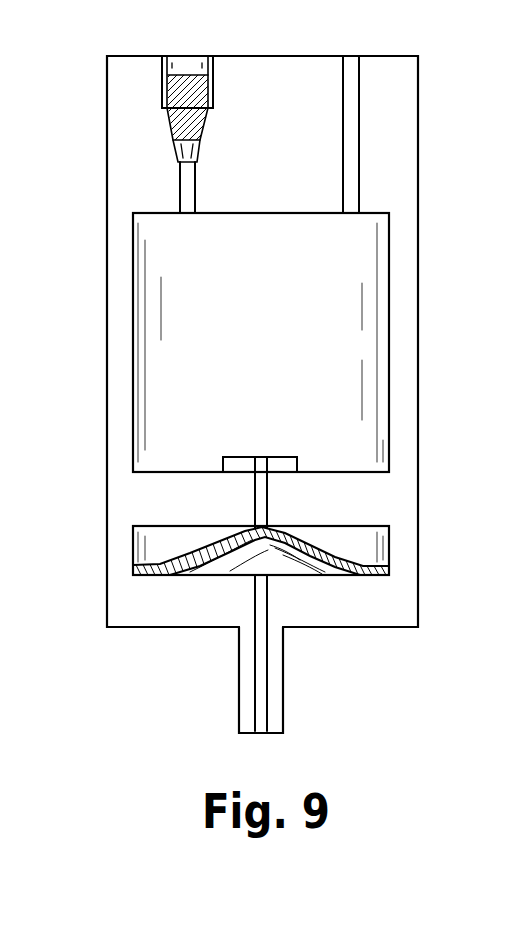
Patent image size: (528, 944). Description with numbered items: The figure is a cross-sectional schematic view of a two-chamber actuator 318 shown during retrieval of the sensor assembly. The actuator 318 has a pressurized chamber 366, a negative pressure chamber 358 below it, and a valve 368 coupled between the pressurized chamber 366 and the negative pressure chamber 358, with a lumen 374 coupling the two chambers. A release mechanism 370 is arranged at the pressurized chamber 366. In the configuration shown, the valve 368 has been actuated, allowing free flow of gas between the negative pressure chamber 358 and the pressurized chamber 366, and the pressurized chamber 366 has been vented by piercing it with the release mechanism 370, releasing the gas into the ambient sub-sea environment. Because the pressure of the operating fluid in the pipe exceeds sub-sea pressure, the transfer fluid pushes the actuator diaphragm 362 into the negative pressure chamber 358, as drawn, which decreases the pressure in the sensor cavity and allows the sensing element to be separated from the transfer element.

The actuator 318 is at (418, 160).
The release mechanism 370 is at (349, 102).
The pressurized chamber 366 is at (284, 328).
The valve 368 is at (281, 457).
The negative pressure chamber 358 is at (138, 549).
The actuator diaphragm 362 is at (373, 567).
The lumen 374 is at (233, 568).